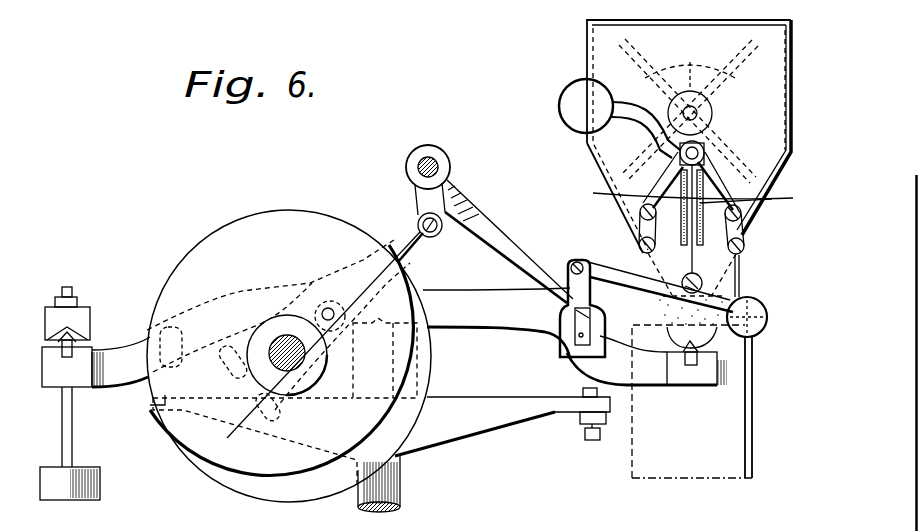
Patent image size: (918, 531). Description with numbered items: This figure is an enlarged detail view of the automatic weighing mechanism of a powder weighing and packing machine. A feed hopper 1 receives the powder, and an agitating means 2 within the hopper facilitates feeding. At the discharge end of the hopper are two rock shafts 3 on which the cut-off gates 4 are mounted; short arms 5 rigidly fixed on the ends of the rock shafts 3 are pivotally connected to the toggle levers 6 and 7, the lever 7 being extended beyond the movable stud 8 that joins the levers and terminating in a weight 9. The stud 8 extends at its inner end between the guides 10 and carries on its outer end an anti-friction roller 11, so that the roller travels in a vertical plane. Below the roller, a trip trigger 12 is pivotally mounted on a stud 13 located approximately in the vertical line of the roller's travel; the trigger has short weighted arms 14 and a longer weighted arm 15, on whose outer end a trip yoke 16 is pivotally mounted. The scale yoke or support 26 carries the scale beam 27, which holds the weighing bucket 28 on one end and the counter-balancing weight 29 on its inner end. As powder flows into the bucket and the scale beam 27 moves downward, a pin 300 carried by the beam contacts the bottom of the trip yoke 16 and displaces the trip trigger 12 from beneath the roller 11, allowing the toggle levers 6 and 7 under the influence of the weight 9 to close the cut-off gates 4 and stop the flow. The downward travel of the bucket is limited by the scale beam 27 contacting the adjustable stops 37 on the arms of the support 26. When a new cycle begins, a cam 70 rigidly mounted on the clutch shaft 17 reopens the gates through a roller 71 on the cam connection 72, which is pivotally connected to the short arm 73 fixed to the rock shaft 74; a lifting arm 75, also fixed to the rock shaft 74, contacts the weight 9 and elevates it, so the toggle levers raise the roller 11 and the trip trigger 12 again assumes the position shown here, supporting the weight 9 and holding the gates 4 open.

The feed hopper 1 is at (670, 33).
The agitating means 2 is at (688, 111).
The rock shafts 3 is at (636, 256).
The cut-off gates 4 is at (683, 246).
The short arms 5 is at (640, 228).
The toggle lever 6 is at (673, 170).
The toggle lever 7 is at (723, 178).
The movable stud 8 is at (705, 151).
The weight 9 is at (560, 97).
The guides 10 is at (747, 198).
The anti-friction roller 11 is at (683, 153).
The trip trigger 12 is at (682, 189).
The stud 13 is at (661, 300).
The short weighted arms 14 is at (755, 309).
The longer weighted arm 15 is at (624, 280).
The trip yoke 16 is at (697, 240).
The clutch shaft 17 is at (312, 341).
The scale yoke or support 26 is at (440, 435).
The scale beam 27 is at (100, 353).
The weighing bucket 28 is at (752, 380).
The counter-balancing weight 29 is at (100, 486).
The adjustable stops 37 is at (228, 364).
The cam 70 is at (282, 222).
The roller 71 is at (326, 306).
The cam connection 72 is at (400, 235).
The short arm 73 is at (415, 198).
The rock shaft 74 is at (428, 158).
The lifting arm 75 is at (480, 220).
The pin 300 is at (573, 333).